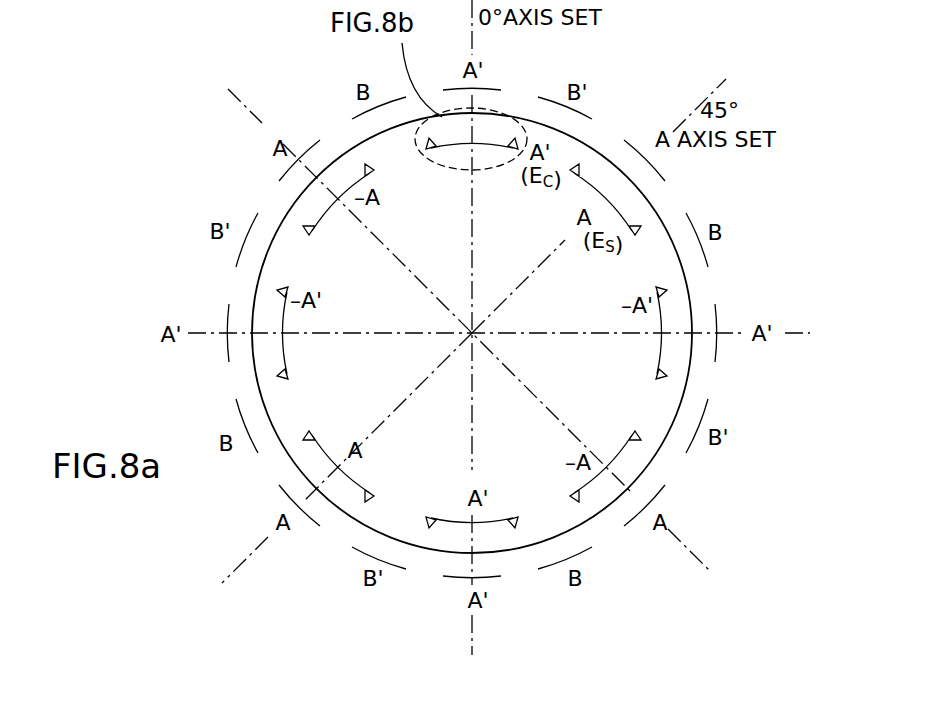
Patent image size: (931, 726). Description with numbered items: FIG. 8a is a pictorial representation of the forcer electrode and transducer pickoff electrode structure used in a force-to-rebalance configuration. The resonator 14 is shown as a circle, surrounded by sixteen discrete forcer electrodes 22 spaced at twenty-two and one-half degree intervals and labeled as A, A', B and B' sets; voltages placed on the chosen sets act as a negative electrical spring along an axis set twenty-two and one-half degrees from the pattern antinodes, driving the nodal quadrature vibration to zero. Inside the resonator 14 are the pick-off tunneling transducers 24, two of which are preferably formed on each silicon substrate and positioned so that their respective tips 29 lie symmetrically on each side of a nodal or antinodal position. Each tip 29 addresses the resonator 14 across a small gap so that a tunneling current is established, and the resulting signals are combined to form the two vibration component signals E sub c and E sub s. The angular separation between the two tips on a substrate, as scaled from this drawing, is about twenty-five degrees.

The resonator 14 is at (692, 375).
The discrete forcer electrodes 22 is at (310, 148).
The tunneling transducers 24 is at (664, 368).
The tip 29 is at (660, 381).